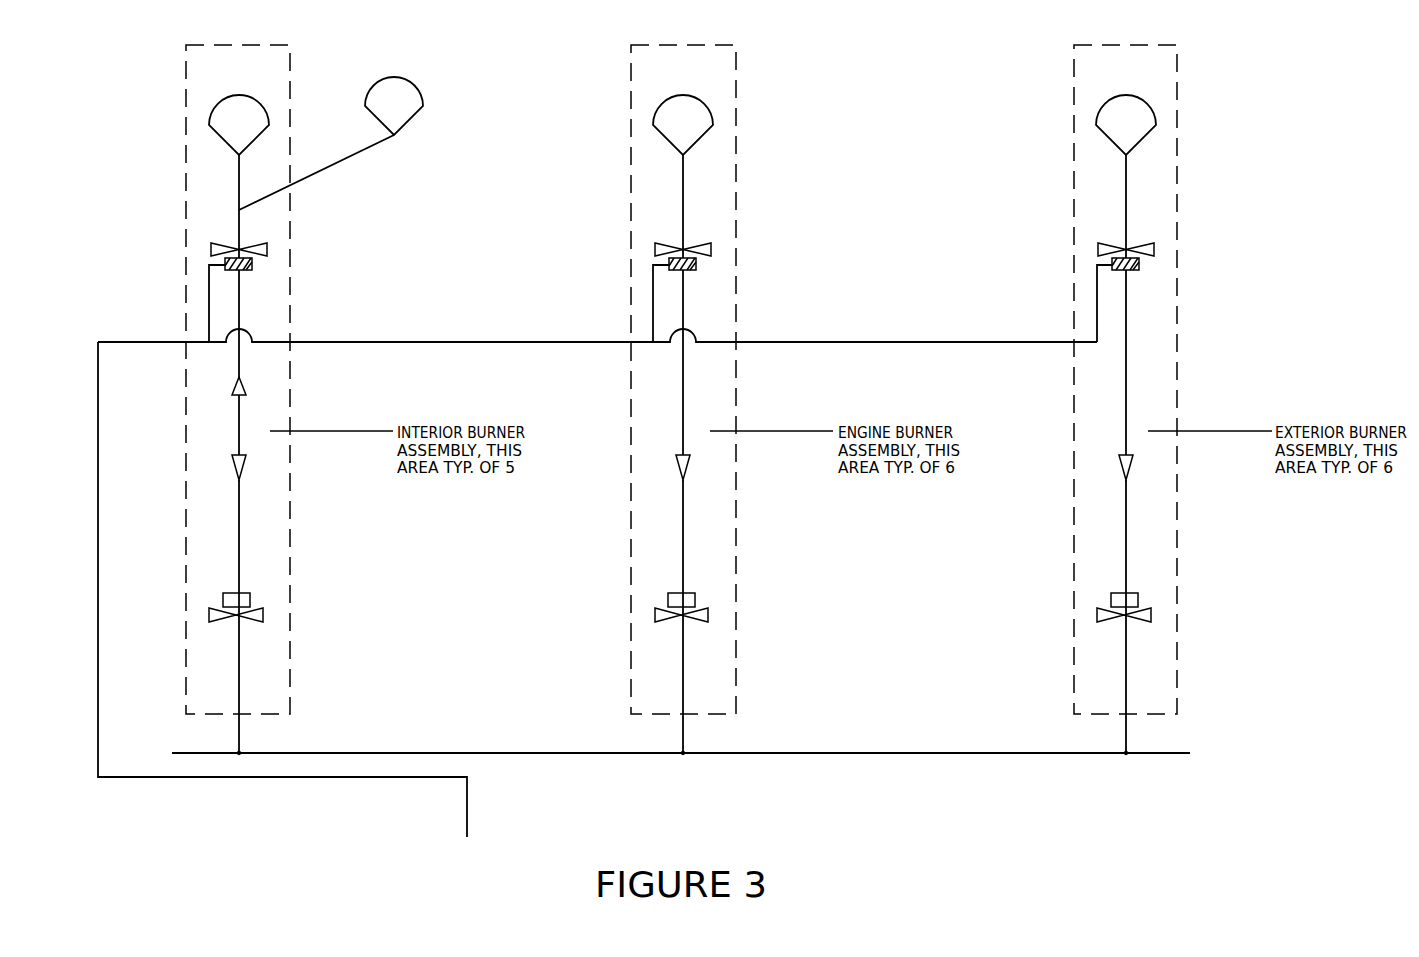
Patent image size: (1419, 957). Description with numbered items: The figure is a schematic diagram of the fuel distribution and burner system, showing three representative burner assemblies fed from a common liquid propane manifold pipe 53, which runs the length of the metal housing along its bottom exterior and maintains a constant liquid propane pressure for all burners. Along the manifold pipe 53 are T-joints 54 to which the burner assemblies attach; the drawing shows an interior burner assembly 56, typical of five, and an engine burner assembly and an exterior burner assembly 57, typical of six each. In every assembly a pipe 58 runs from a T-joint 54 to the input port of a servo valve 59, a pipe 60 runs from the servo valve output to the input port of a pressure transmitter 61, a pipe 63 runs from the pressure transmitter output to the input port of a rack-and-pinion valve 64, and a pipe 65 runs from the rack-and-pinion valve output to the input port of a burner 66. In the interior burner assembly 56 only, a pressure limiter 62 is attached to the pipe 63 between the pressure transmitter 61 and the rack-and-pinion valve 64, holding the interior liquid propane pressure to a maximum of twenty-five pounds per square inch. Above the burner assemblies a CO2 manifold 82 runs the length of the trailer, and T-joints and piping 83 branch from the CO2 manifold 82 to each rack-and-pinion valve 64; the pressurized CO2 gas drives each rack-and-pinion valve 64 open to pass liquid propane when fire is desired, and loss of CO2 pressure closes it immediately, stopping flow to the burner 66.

The liquid propane manifold pipe 53 is at (318, 755).
The T-joint 54 is at (233, 758).
The interior burner assembly 56 is at (327, 182).
The exterior and mock jet engine burner assembly 57 is at (995, 128).
The pipe 58 is at (239, 674).
The servo valve 59 is at (273, 603).
The pipe 60 is at (239, 522).
The pressure transmitter 61 is at (245, 467).
The pressure limiter 62 is at (232, 390).
The pipe 63 is at (239, 368).
The rack-and-pinion valve 64 is at (252, 265).
The pipe 65 is at (239, 232).
The burner 66 is at (258, 120).
The CO2 manifold 82 is at (995, 335).
The T-joints and piping 83 is at (650, 303).